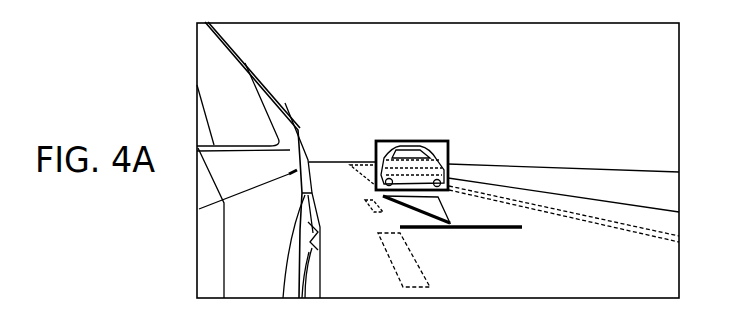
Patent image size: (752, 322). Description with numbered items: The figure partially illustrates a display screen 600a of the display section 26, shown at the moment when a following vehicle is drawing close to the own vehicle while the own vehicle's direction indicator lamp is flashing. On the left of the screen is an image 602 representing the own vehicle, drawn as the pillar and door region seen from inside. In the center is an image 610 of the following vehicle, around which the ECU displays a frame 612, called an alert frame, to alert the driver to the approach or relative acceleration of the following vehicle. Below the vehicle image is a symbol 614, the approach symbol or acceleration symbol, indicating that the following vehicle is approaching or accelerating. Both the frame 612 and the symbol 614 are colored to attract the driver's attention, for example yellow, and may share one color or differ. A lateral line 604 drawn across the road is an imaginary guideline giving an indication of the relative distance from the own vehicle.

The display section 26 is at (662, 14).
The display screen 600a is at (282, 23).
The own-vehicle image 602 is at (266, 93).
The lateral line 604 is at (508, 231).
The image of the following vehicle 610 is at (402, 150).
The alert frame 612 is at (428, 141).
The approach symbol 614 is at (437, 229).